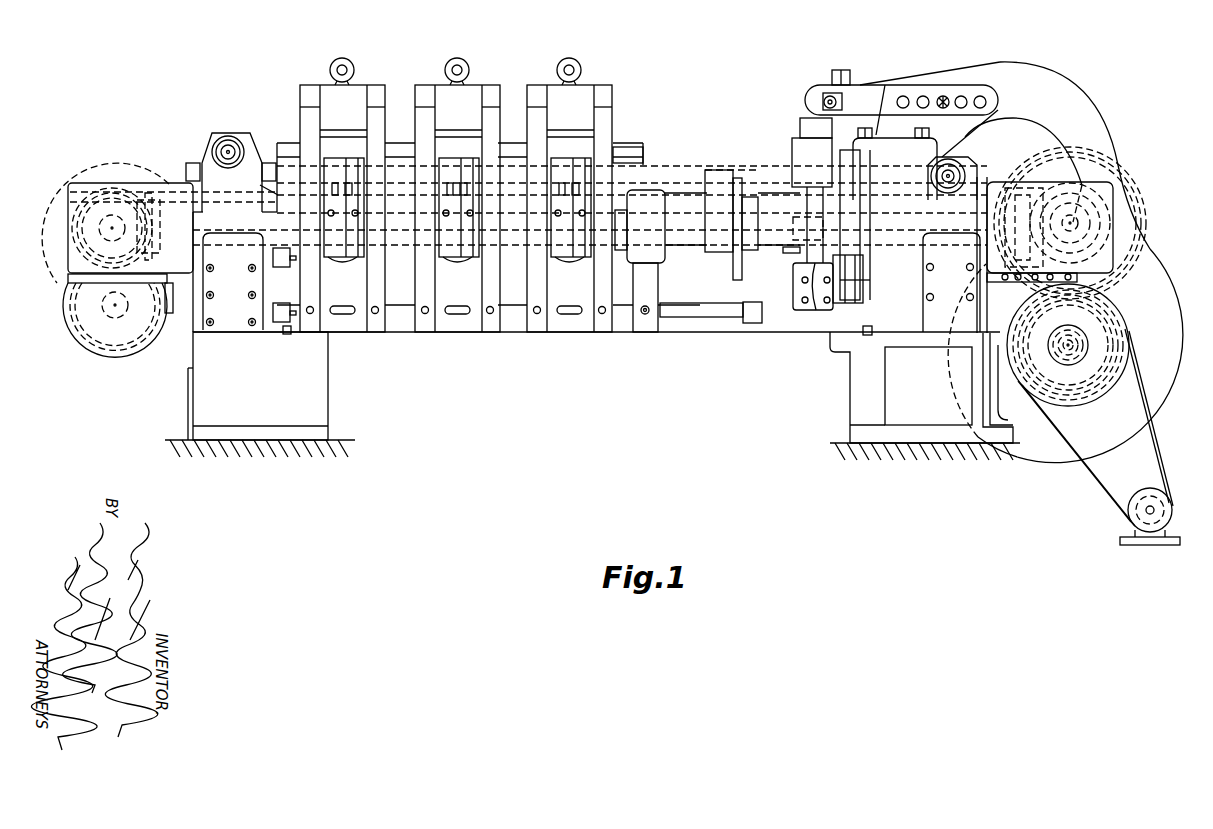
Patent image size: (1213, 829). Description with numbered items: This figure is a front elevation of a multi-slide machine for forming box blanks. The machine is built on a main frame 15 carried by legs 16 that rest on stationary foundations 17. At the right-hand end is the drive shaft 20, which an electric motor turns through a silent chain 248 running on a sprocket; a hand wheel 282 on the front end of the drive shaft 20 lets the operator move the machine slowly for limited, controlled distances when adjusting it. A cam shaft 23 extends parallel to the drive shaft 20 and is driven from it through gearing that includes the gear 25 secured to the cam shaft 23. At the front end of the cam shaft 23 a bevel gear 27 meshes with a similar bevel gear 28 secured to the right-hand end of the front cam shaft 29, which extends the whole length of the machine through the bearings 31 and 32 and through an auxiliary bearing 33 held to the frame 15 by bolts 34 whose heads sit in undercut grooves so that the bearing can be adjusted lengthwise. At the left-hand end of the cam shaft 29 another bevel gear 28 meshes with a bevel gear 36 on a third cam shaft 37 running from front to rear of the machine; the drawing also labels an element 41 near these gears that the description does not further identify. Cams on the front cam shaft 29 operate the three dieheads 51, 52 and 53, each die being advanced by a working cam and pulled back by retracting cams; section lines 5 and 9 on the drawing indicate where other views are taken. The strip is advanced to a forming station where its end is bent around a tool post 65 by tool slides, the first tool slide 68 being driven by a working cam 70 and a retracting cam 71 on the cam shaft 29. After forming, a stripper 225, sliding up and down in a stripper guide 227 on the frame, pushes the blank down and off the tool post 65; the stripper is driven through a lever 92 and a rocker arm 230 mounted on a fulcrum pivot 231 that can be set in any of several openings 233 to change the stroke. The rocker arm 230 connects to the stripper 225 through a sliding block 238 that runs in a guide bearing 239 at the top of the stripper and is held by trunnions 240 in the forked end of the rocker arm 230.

The section line 5 is at (291, 188).
The section line 9 is at (287, 232).
The main frame 15 is at (708, 346).
The legs 16 is at (325, 377).
The stationary foundations 17 is at (343, 440).
The drive shaft 20 is at (1062, 347).
The cam shaft 23 is at (1076, 215).
The gear 25 is at (1132, 176).
The bevel gear 27 is at (1128, 277).
The bevel gear 28 is at (140, 195).
The cam shaft 29 is at (680, 220).
The bearing 31 is at (932, 205).
The bearing 32 is at (213, 185).
The auxiliary bearing 33 is at (652, 198).
The bolts 34 is at (650, 306).
The bevel gear 36 is at (92, 183).
The cam shaft 37 is at (98, 228).
The guard 41 is at (40, 188).
The diehead 51 is at (352, 90).
The diehead 52 is at (467, 90).
The diehead 53 is at (582, 92).
The tool post 65 is at (795, 188).
The first tool slide 68 is at (832, 240).
The working cam 70 is at (815, 312).
The retracting cam 71 is at (845, 312).
The lever 92 is at (1066, 74).
The stripper 225 is at (805, 128).
The stripper guide 227 is at (800, 160).
The rocker arm 230 is at (888, 80).
The fulcrum pivot 231 is at (945, 95).
The openings 233 is at (922, 95).
The sliding block 238 is at (828, 92).
The guide bearing 239 is at (824, 103).
The trunnions 240 is at (830, 95).
The silent chain 248 is at (1100, 485).
The hand wheel 282 is at (1078, 405).